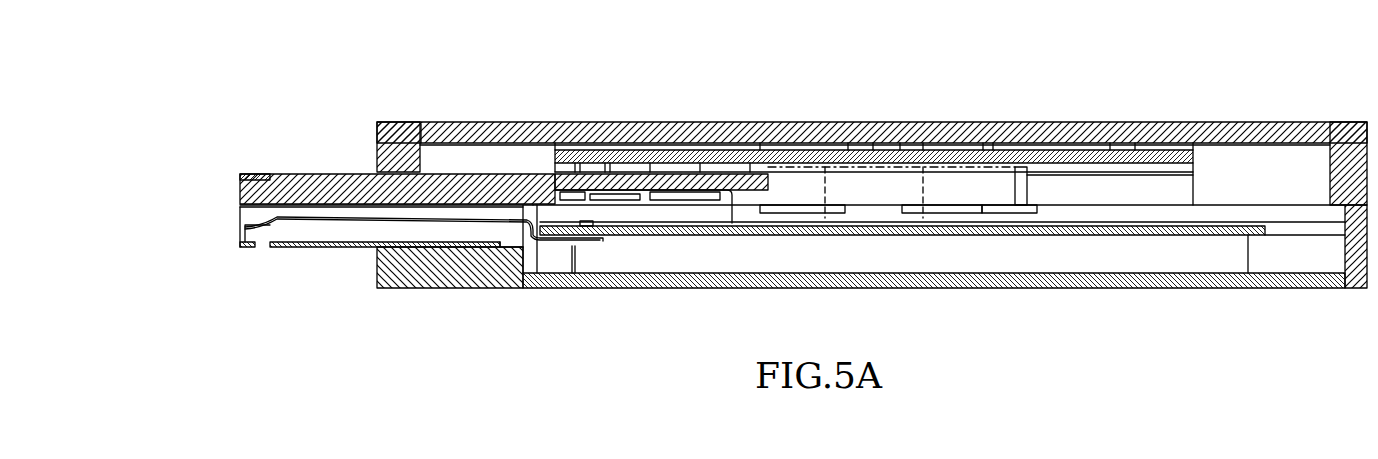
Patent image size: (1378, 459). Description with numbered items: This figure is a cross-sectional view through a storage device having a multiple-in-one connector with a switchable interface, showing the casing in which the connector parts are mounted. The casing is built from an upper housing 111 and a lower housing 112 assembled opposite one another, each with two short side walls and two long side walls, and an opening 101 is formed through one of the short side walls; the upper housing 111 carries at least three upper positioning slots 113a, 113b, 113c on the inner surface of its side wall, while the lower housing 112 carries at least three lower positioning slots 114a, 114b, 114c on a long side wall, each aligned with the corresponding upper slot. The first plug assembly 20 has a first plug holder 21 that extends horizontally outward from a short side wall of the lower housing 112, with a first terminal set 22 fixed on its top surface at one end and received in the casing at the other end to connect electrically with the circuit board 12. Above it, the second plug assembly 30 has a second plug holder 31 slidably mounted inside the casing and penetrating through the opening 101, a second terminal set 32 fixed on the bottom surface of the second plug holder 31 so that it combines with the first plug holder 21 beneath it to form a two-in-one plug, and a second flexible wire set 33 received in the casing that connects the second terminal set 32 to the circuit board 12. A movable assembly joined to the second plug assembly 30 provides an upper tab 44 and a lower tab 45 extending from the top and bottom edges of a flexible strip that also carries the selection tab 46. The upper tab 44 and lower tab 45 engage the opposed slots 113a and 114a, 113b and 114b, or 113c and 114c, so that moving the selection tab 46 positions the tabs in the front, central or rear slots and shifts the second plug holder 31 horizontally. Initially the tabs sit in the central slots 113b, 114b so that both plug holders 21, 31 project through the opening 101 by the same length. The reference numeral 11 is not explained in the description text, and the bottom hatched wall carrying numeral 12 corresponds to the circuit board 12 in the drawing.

The housing 11 is at (522, 118).
The circuit board 12 is at (445, 287).
The opening 101 is at (421, 122).
The upper housing 111 is at (563, 127).
The lower housing 112 is at (545, 287).
The upper positioning slot 113a is at (755, 150).
The upper positioning slot 113b is at (960, 147).
The upper positioning slot 113c is at (1045, 148).
The lower positioning slot 114a is at (747, 208).
The lower positioning slot 114b is at (888, 215).
The lower positioning slot 114c is at (1008, 210).
The first plug assembly 20 is at (240, 257).
The first plug holder 21 is at (240, 238).
The first terminal set 22 is at (320, 218).
The second plug assembly 30 is at (342, 145).
The second plug holder 31 is at (327, 188).
The second terminal set 32 is at (240, 176).
The second flexible wire set 33 is at (667, 192).
The upper tab 44 is at (873, 147).
The lower tab 45 is at (863, 210).
The selection tab 46 is at (898, 192).